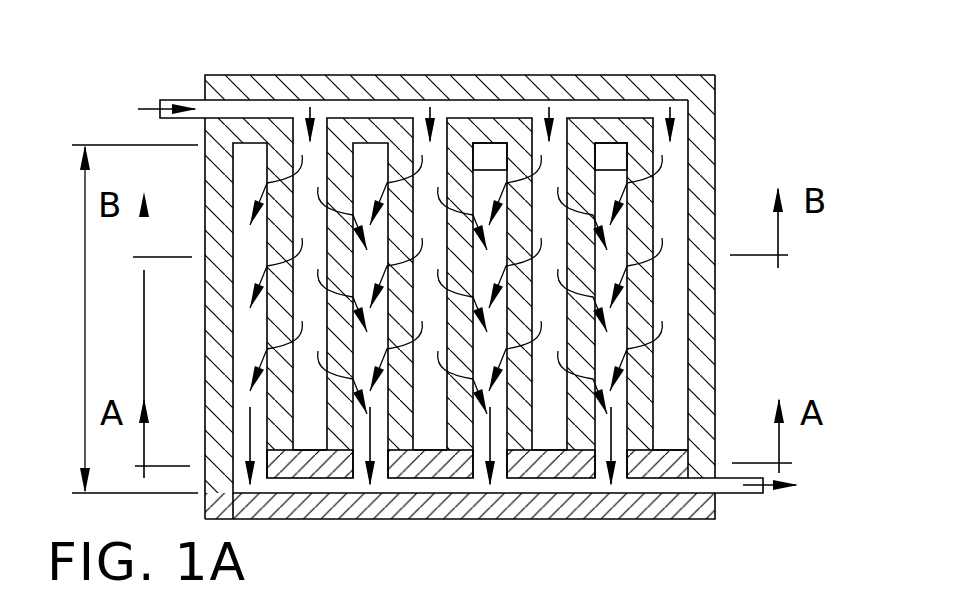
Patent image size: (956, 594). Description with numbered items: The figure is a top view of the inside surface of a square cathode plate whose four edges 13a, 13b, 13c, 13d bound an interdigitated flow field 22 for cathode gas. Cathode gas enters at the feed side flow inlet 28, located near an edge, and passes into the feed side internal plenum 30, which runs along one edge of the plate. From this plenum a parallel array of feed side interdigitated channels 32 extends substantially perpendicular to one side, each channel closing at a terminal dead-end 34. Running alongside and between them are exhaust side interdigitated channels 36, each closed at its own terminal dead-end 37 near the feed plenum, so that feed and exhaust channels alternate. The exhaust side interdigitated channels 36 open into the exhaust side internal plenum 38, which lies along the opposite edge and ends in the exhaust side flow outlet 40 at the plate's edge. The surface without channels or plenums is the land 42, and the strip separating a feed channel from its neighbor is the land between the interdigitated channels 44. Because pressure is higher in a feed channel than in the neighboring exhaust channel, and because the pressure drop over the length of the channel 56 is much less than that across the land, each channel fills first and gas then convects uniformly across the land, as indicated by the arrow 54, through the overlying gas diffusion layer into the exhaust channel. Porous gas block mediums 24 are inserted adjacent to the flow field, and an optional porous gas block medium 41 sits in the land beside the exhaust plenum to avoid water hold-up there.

The edge 13a is at (409, 76).
The edge 13b is at (715, 173).
The edge 13c is at (460, 541).
The edge 13d is at (205, 180).
The interdigitated flow field 22 is at (443, 110).
The porous gas block mediums 24 is at (325, 468).
The feed side flow inlet 28 is at (197, 105).
The feed side internal plenum 30 is at (403, 110).
The feed side interdigitated channels 32 is at (585, 345).
The terminal dead-end 34 is at (565, 442).
The exhaust side interdigitated channels 36 is at (500, 472).
The terminal dead-end 37 is at (550, 157).
The exhaust side internal plenum 38 is at (282, 488).
The exhaust side flow outlet 40 is at (725, 485).
The porous gas block medium 41 is at (448, 515).
The land 42 is at (460, 296).
The land between the interdigitated channels 44 is at (593, 130).
The arrow 54 is at (356, 180).
The length of the channel 56 is at (85, 315).